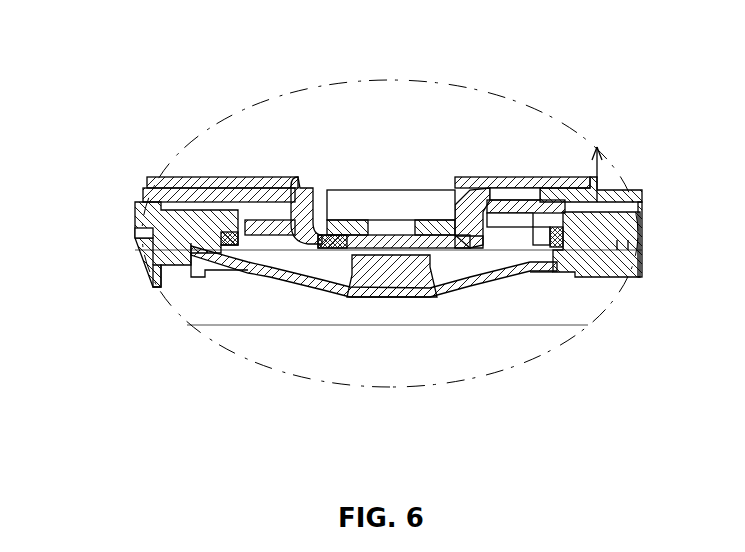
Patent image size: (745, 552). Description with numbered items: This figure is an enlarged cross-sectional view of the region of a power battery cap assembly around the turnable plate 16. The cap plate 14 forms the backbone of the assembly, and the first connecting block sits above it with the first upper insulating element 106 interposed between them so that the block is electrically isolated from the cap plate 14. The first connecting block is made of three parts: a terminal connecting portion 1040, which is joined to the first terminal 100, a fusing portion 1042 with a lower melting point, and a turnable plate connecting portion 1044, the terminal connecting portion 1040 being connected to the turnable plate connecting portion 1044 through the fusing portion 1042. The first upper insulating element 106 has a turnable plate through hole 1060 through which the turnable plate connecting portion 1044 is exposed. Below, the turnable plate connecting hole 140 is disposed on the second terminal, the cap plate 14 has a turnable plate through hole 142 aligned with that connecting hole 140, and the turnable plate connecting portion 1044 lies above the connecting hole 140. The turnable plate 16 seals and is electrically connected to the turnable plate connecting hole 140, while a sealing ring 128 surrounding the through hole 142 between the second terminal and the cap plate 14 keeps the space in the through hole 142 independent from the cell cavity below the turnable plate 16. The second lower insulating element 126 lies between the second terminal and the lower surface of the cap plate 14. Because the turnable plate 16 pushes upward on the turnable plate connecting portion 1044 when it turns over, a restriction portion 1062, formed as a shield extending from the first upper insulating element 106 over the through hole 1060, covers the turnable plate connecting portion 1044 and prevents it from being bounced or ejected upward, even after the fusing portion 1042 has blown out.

The cap plate 14 is at (150, 176).
The turnable plate 16 is at (350, 297).
The first terminal 100 is at (205, 275).
The first upper insulating element 106 is at (597, 147).
The second lower insulating element 126 is at (157, 289).
The sealing ring 128 is at (553, 250).
The turnable plate connecting hole 140 is at (488, 252).
The turnable plate through hole 142 is at (518, 220).
The terminal connecting portion 1040 is at (208, 176).
The fusing portion 1042 is at (352, 222).
The turnable plate connecting portion 1044 is at (420, 236).
The turnable plate through hole 1060 is at (398, 249).
The restriction portion 1062 is at (305, 190).